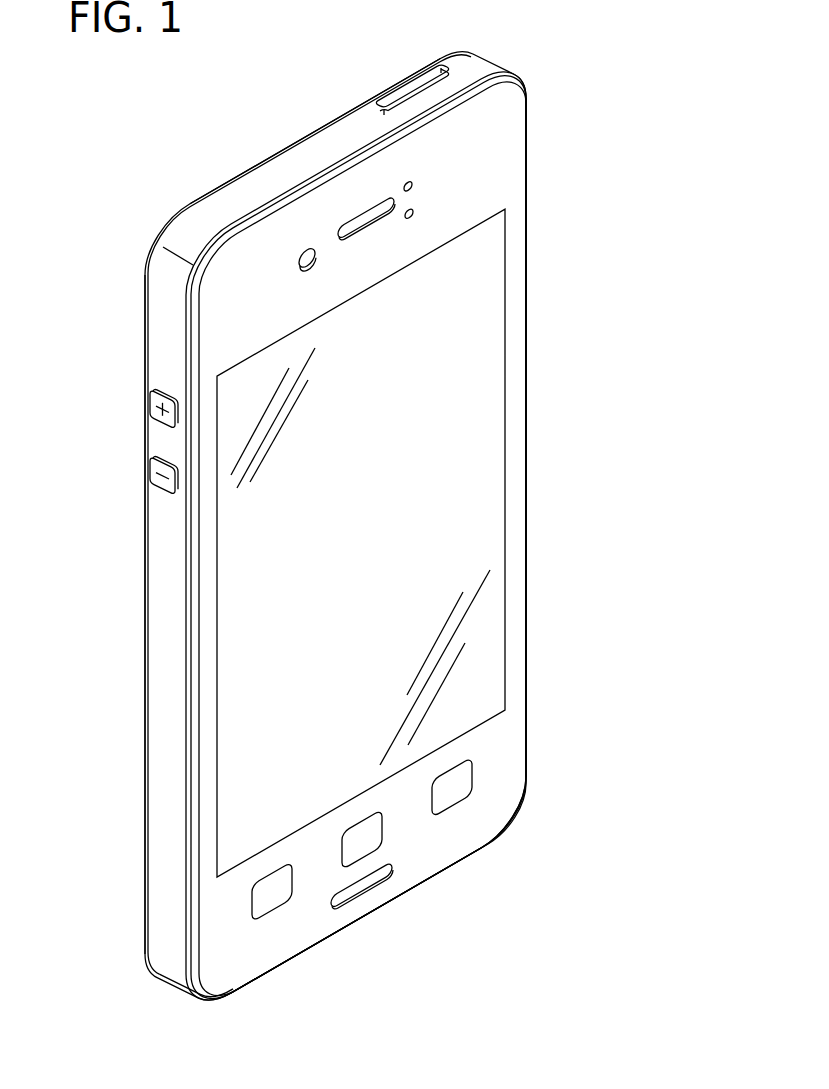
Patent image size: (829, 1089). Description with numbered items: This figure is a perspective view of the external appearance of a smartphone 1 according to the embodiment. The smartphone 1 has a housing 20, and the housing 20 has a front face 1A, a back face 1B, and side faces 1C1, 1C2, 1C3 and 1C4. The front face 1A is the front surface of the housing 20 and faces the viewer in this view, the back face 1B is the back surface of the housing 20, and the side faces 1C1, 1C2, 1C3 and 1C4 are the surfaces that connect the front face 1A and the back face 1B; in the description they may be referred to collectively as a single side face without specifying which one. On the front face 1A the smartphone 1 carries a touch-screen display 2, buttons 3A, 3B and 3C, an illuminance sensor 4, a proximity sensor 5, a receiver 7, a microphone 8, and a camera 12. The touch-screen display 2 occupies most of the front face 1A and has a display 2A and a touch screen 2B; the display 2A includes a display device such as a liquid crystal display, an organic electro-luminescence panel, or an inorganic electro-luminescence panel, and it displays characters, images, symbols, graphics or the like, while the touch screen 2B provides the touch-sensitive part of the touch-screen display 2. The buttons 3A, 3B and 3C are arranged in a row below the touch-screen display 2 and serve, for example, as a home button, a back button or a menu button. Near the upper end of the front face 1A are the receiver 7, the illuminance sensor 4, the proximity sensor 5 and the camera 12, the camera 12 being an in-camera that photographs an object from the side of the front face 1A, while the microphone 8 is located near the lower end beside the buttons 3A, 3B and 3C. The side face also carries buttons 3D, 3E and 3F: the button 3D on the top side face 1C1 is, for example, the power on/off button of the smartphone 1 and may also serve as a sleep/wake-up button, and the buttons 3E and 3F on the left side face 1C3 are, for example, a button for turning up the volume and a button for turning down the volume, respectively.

The smartphone 1 is at (655, 133).
The front face 1A is at (240, 267).
The back face 1B is at (145, 315).
The side face 1C1 is at (347, 133).
The side face 1C2 is at (423, 883).
The side face 1C3 is at (160, 725).
The side face 1C4 is at (527, 328).
The touch-screen display 2 is at (487, 523).
The display 2A is at (273, 418).
The touch screen 2B is at (435, 667).
The button 3A is at (273, 898).
The button 3B is at (360, 848).
The button 3C is at (452, 790).
The button 3D is at (423, 90).
The button 3E is at (153, 413).
The button 3F is at (153, 477).
The illuminance sensor 4 is at (408, 182).
The proximity sensor 5 is at (414, 213).
The receiver 7 is at (348, 222).
The microphone 8 is at (348, 892).
The camera 12 is at (307, 247).
The housing 20 is at (160, 348).